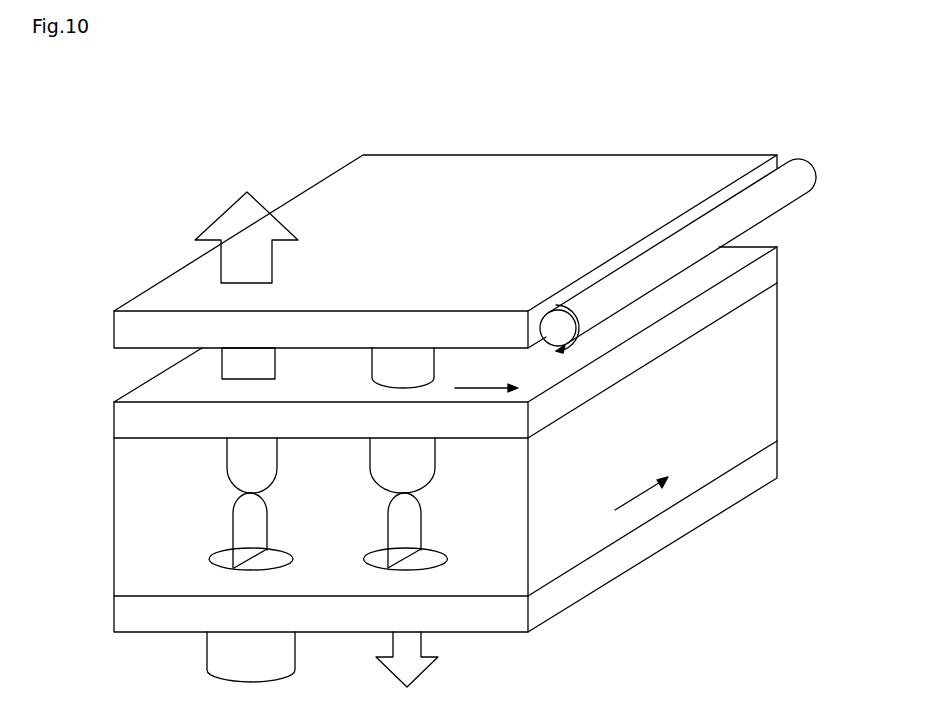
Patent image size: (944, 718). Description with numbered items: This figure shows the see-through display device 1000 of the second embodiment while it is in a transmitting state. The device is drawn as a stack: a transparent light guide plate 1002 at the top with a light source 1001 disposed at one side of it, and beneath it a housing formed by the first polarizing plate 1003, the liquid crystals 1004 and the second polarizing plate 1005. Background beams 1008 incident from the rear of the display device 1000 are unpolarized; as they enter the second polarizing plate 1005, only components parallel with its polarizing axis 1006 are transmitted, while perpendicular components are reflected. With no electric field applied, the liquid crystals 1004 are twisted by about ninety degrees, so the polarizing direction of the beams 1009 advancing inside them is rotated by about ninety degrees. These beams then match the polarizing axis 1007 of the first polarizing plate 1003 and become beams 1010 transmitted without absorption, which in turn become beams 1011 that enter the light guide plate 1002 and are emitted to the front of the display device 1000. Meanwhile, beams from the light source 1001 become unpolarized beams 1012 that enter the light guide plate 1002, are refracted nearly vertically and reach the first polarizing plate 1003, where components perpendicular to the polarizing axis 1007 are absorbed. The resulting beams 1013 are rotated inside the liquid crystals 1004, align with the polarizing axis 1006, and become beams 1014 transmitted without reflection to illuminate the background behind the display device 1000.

The display device 1000 is at (738, 133).
The light source 1001 is at (562, 328).
The light guide plate 1002 is at (124, 328).
The first polarizing plate 1003 is at (772, 263).
The liquid crystals 1004 is at (772, 373).
The second polarizing plate 1005 is at (772, 468).
The polarizing axis 1006 is at (645, 488).
The polarizing axis 1007 is at (477, 384).
The background beams 1008 is at (213, 655).
The beams 1009 is at (257, 497).
The beams 1010 is at (222, 365).
The beams 1011 is at (285, 220).
The unpolarized beams 1012 is at (378, 365).
The beams 1013 is at (413, 497).
The beams 1014 is at (420, 643).